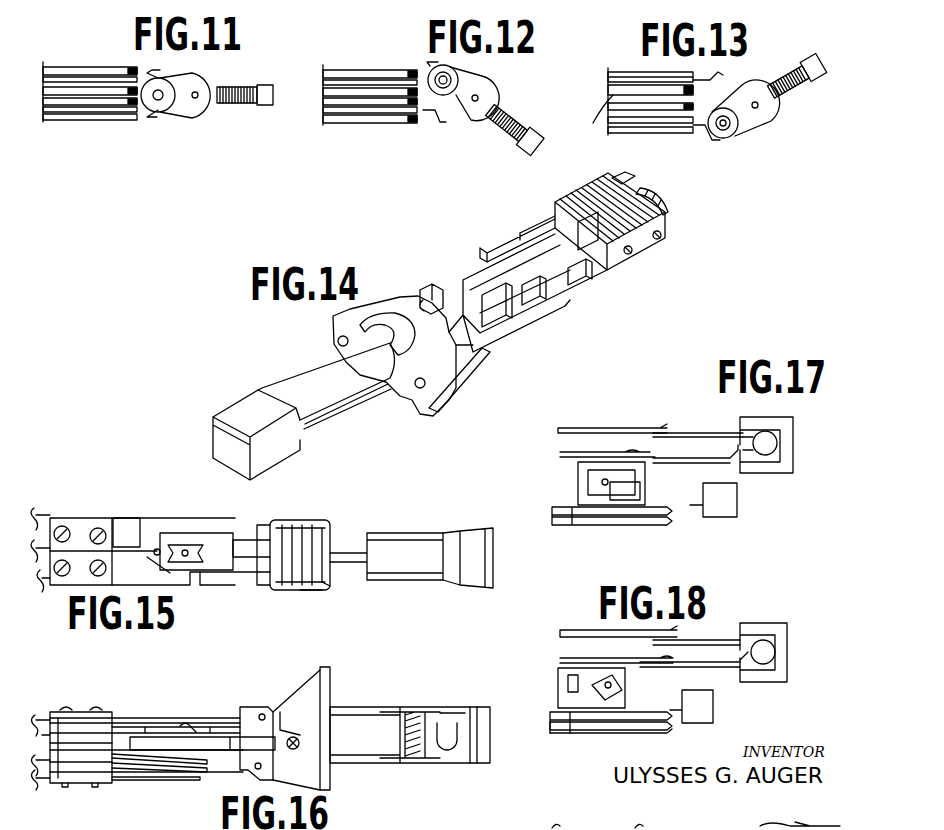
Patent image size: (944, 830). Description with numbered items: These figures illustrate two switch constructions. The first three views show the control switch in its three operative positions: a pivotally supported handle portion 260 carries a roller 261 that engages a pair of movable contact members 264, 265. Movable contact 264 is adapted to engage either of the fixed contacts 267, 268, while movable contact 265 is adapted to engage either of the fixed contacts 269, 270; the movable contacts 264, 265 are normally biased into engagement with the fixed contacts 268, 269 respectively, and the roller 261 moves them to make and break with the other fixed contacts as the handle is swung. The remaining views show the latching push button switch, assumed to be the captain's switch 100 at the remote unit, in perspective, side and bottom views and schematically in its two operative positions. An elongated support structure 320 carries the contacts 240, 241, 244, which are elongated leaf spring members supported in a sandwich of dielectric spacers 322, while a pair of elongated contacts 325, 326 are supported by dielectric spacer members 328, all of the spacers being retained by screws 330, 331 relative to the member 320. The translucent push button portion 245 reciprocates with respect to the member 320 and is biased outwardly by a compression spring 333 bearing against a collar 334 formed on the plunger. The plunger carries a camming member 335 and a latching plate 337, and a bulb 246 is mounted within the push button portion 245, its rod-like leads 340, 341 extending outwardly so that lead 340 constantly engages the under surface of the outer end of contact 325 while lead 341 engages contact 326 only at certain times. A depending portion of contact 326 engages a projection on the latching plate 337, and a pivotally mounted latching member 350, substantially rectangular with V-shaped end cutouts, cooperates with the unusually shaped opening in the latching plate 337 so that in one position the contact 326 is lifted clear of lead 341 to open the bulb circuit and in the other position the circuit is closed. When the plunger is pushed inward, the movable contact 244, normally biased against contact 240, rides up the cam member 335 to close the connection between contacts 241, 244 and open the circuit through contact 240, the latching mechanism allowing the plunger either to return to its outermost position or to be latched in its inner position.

In FIG. 14, the captain's switch 100 is at (258, 378).
In FIG. 14, the contact 240 is at (540, 290).
In FIG. 16, the contact 240 is at (152, 760).
In FIG. 18, the contact 240 is at (614, 723).
In FIG. 14, the contact 241 is at (580, 282).
In FIG. 16, the contact 241 is at (135, 778).
In FIG. 18, the contact 241 is at (597, 732).
In FIG. 14, the movable contact 244 is at (510, 310).
In FIG. 16, the movable contact 244 is at (215, 780).
In FIG. 18, the movable contact 244 is at (680, 731).
In FIG. 14, the push button portion 245 is at (262, 452).
In FIG. 15, the push button portion 245 is at (492, 508).
In FIG. 16, the push button portion 245 is at (481, 758).
In FIG. 17, the push button portion 245 is at (793, 450).
In FIG. 18, the push button portion 245 is at (787, 660).
In FIG. 16, the bulb 246 is at (447, 760).
In FIG. 17, the bulb 246 is at (776, 441).
In FIG. 18, the bulb 246 is at (767, 652).
In FIG. 11, the handle portion 260 is at (236, 104).
In FIG. 12, the handle portion 260 is at (508, 137).
In FIG. 13, the handle portion 260 is at (800, 88).
In FIG. 11, the roller 261 is at (161, 107).
In FIG. 12, the roller 261 is at (438, 92).
In FIG. 13, the roller 261 is at (735, 125).
In FIG. 11, the movable contact member 264 is at (62, 77).
In FIG. 12, the movable contact member 264 is at (343, 80).
In FIG. 13, the movable contact member 264 is at (613, 90).
In FIG. 11, the movable contact member 265 is at (68, 112).
In FIG. 12, the movable contact member 265 is at (363, 120).
In FIG. 13, the movable contact member 265 is at (630, 123).
In FIG. 11, the fixed contact 267 is at (50, 67).
In FIG. 12, the fixed contact 267 is at (328, 70).
In FIG. 13, the fixed contact 267 is at (618, 72).
In FIG. 11, the fixed contact 268 is at (83, 87).
In FIG. 12, the fixed contact 268 is at (380, 90).
In FIG. 13, the fixed contact 268 is at (592, 118).
In FIG. 11, the fixed contact 269 is at (102, 105).
In FIG. 12, the fixed contact 269 is at (390, 107).
In FIG. 13, the fixed contact 269 is at (667, 110).
In FIG. 11, the fixed contact 270 is at (45, 121).
In FIG. 12, the fixed contact 270 is at (328, 125).
In FIG. 13, the fixed contact 270 is at (613, 133).
In FIG. 14, the elongated support structure 320 is at (413, 404).
In FIG. 15, the elongated support structure 320 is at (330, 522).
In FIG. 14, the dielectric spacers 322 is at (668, 208).
In FIG. 14, the elongated contact 325 is at (513, 242).
In FIG. 15, the elongated contact 325 is at (122, 530).
In FIG. 17, the elongated contact 325 is at (575, 428).
In FIG. 18, the elongated contact 325 is at (568, 630).
In FIG. 15, the elongated contact 326 is at (186, 572).
In FIG. 16, the elongated contact 326 is at (115, 720).
In FIG. 17, the elongated contact 326 is at (588, 452).
In FIG. 18, the elongated contact 326 is at (560, 658).
In FIG. 14, the dielectric spacer members 328 is at (630, 178).
In FIG. 14, the screws 330 is at (657, 240).
In FIG. 15, the screws 330 is at (92, 528).
In FIG. 16, the screws 330 is at (331, 692).
In FIG. 15, the screws 331 is at (95, 578).
In FIG. 15, the spring 333 is at (305, 588).
In FIG. 15, the collar 334 is at (325, 590).
In FIG. 14, the camming member 335 is at (465, 350).
In FIG. 16, the camming member 335 is at (255, 712).
In FIG. 17, the camming member 335 is at (728, 498).
In FIG. 18, the camming member 335 is at (707, 709).
In FIG. 15, the latching plate 337 is at (192, 523).
In FIG. 16, the latching plate 337 is at (156, 727).
In FIG. 17, the latching plate 337 is at (642, 475).
In FIG. 18, the latching plate 337 is at (568, 685).
In FIG. 15, the lead 340 is at (262, 526).
In FIG. 17, the lead 340 is at (677, 432).
In FIG. 18, the lead 340 is at (682, 644).
In FIG. 15, the lead 341 is at (242, 586).
In FIG. 16, the lead 341 is at (237, 707).
In FIG. 17, the lead 341 is at (685, 458).
In FIG. 18, the lead 341 is at (700, 668).
In FIG. 15, the latching member 350 is at (178, 545).
In FIG. 16, the latching member 350 is at (190, 724).
In FIG. 17, the latching member 350 is at (588, 480).